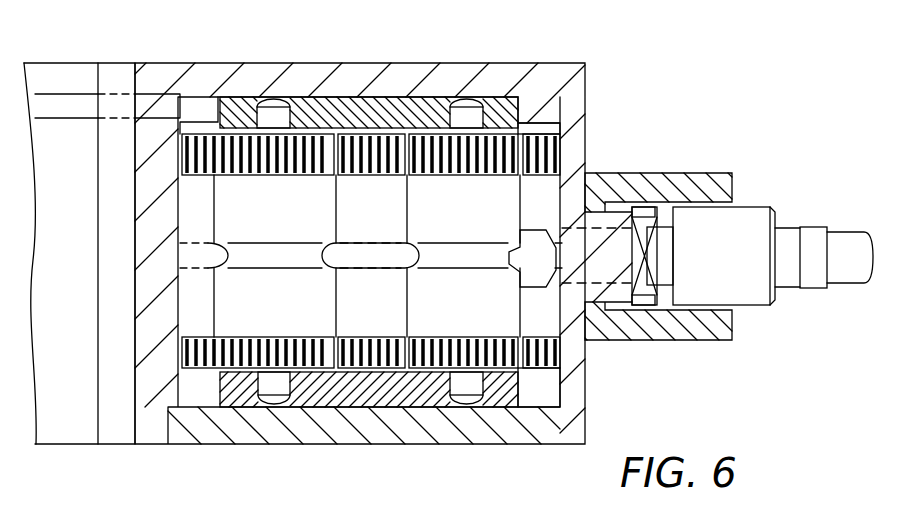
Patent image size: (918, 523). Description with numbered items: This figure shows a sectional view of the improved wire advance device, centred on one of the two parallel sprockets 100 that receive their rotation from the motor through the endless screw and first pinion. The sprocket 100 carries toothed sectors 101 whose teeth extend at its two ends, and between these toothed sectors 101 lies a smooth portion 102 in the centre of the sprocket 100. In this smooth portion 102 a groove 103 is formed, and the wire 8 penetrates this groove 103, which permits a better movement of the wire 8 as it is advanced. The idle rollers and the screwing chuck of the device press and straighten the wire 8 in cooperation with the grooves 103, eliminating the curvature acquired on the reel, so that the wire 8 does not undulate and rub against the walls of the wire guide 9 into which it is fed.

The sprocket 100 is at (537, 128).
The toothed sector 101 is at (216, 143).
The smooth portion 102 is at (228, 302).
The groove 103 is at (227, 255).
The wire 8 is at (372, 243).
The wire guide 9 is at (848, 238).